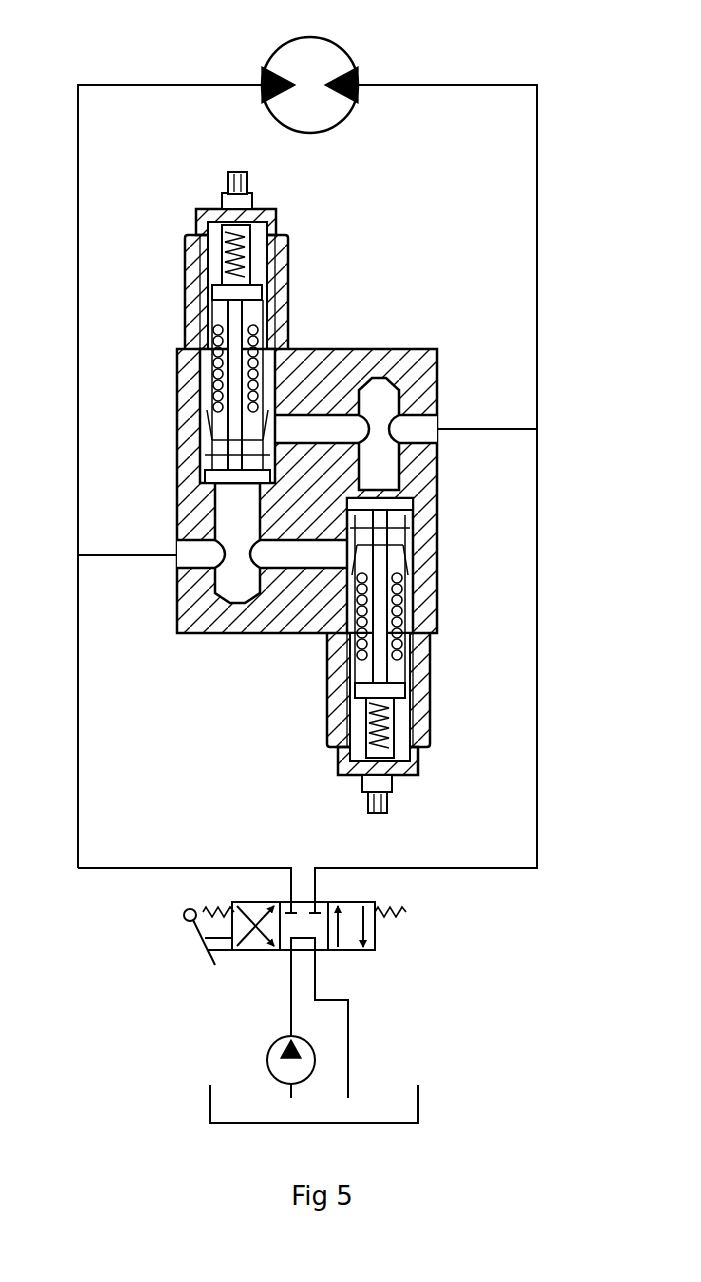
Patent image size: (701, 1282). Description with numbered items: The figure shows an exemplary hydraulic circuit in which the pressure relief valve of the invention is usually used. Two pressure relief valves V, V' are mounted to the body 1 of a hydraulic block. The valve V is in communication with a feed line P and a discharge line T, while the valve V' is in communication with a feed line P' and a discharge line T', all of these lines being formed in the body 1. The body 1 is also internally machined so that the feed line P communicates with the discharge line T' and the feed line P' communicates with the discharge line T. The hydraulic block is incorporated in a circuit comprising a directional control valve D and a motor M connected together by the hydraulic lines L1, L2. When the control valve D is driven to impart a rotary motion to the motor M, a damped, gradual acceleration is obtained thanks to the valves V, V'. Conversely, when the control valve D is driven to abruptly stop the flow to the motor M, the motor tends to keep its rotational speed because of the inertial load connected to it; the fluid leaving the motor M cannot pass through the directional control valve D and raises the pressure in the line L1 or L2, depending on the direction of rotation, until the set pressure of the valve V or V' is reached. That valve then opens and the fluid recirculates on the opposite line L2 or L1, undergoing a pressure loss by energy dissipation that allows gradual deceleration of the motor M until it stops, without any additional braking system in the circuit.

The body of hydraulic block 1 is at (192, 620).
The pressure relief valve V is at (220, 322).
The pressure relief valve V' is at (398, 662).
The hydraulic line L1 is at (163, 493).
The hydraulic line L2 is at (448, 493).
The motor M is at (310, 70).
The feed line P is at (237, 543).
The feed line P' is at (379, 434).
The discharge line T is at (356, 430).
The discharge line T' is at (262, 555).
The directional control valve D is at (297, 939).